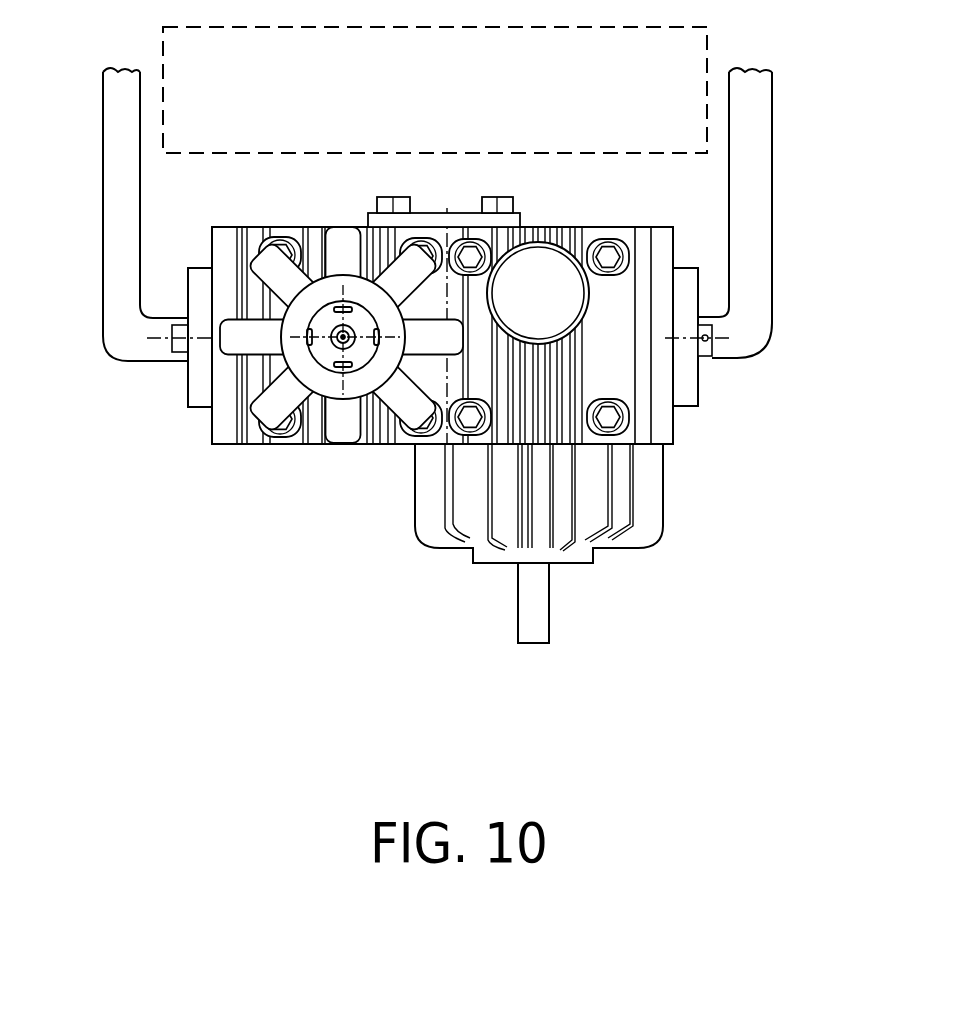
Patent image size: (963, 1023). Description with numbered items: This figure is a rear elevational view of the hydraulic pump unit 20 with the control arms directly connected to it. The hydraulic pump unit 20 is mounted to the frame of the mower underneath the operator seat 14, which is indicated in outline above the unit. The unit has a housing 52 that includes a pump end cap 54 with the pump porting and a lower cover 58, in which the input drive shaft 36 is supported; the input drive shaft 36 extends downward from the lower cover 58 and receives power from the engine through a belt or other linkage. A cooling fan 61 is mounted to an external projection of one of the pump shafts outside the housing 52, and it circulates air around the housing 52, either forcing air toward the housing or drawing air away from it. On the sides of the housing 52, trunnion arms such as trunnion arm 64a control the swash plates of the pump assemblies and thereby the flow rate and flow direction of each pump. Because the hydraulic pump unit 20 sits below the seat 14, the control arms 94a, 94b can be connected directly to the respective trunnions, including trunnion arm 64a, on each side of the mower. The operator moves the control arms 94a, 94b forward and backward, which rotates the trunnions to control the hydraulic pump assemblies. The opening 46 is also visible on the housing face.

The operator seat 14 is at (475, 103).
The hydraulic pump unit 20 is at (638, 208).
The input drive shaft 36 is at (537, 627).
The inlet opening 46 is at (538, 270).
The housing 52 is at (684, 220).
The pump end cap 54 is at (188, 407).
The lower cover 58 is at (662, 480).
The cooling fan 61 is at (270, 400).
The trunnion arm 64a is at (712, 343).
The control arm 94a is at (772, 145).
The control arm 94b is at (102, 190).